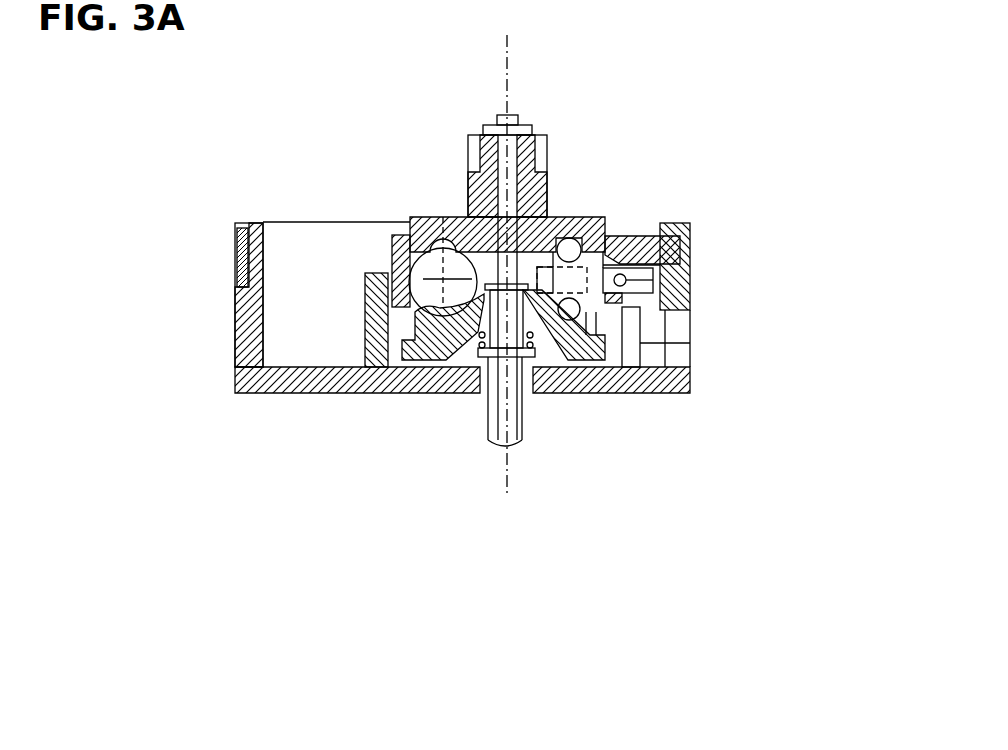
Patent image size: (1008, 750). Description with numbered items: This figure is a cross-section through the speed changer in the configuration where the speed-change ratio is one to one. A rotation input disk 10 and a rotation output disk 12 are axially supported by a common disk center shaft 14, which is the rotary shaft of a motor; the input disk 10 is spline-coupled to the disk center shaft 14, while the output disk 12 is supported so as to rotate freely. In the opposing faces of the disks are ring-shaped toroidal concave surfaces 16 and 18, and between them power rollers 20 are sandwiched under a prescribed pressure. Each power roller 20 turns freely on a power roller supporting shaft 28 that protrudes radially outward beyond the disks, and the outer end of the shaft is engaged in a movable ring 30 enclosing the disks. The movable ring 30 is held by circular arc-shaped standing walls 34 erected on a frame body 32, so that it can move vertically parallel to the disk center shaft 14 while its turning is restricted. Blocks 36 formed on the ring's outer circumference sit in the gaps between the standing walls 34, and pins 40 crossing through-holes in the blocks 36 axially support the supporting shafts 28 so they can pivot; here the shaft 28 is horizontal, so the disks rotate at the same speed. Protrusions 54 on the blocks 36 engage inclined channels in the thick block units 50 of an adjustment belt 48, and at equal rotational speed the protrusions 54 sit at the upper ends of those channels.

The rotation input disk 10 is at (505, 334).
The rotation output disk 12 is at (452, 215).
The disk center shaft 14 is at (522, 423).
The concave surface 16 is at (417, 307).
The concave surface 18 is at (427, 215).
The power roller 20 is at (570, 237).
The power roller supporting shaft 28 is at (648, 293).
The movable ring 30 is at (392, 245).
The frame body 32 is at (235, 372).
The standing wall 34 is at (365, 282).
The block 36 is at (630, 235).
The pin 40 is at (693, 270).
The adjustment belt 48 is at (237, 257).
The block unit 50 is at (695, 233).
The protrusion 54 is at (693, 253).